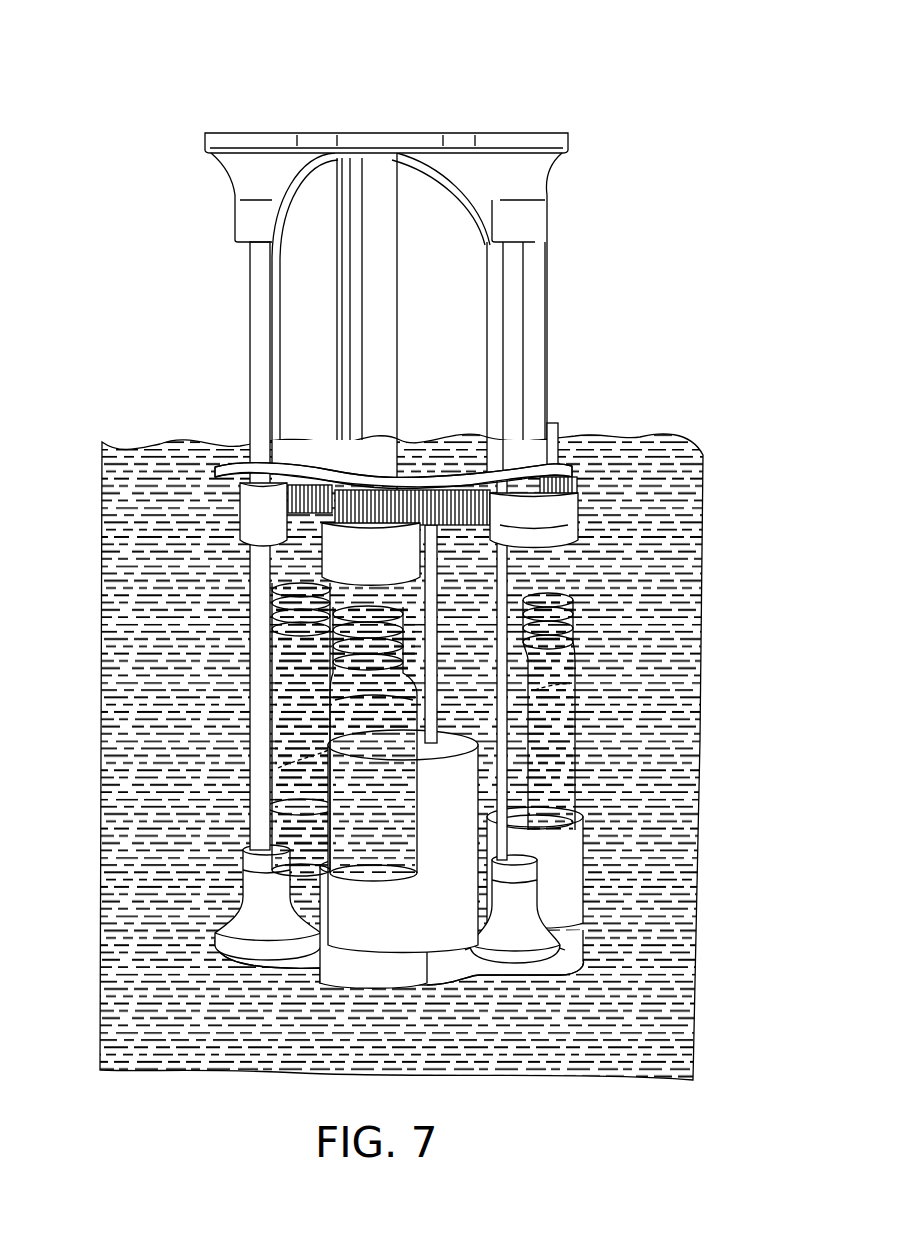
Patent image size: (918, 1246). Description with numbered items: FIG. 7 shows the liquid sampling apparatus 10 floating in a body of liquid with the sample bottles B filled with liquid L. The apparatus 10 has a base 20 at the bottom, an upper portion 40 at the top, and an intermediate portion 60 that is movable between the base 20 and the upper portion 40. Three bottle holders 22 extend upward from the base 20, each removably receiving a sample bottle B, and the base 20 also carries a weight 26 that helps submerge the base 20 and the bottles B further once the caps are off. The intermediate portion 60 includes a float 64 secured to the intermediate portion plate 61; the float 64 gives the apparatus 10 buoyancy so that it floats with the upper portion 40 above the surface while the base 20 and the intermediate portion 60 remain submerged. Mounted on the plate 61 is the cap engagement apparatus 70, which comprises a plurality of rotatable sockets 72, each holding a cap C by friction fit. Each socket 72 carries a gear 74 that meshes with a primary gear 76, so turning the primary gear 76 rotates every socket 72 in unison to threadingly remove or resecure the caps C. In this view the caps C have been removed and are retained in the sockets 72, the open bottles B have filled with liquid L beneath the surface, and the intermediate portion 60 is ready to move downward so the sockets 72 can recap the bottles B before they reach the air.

The liquid sampling apparatus 10 is at (380, 519).
The upper portion 40 is at (606, 140).
The float 64 is at (455, 302).
The intermediate portion plate 61 is at (587, 462).
The intermediate portion 60 is at (118, 475).
The cap engagement apparatus 70 is at (185, 478).
The gear 74 is at (300, 512).
The socket 72 is at (335, 553).
The primary gear 76 is at (451, 517).
The cap C is at (333, 587).
The weight 26 is at (440, 744).
The liquid L is at (575, 680).
The sample bottle B is at (578, 730).
The bottle holder 22 is at (572, 878).
The base 20 is at (578, 950).